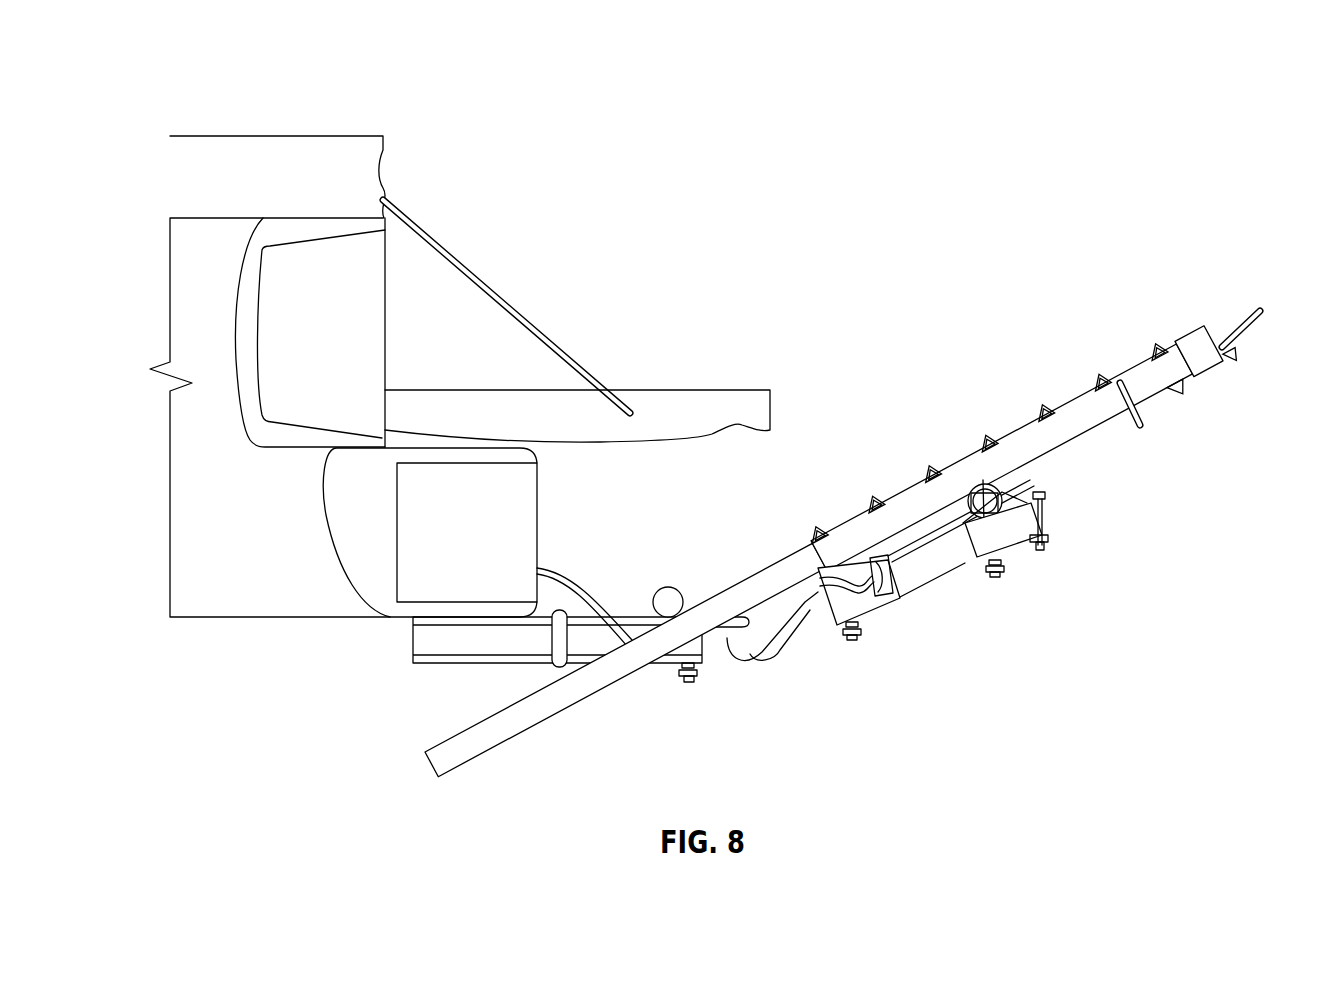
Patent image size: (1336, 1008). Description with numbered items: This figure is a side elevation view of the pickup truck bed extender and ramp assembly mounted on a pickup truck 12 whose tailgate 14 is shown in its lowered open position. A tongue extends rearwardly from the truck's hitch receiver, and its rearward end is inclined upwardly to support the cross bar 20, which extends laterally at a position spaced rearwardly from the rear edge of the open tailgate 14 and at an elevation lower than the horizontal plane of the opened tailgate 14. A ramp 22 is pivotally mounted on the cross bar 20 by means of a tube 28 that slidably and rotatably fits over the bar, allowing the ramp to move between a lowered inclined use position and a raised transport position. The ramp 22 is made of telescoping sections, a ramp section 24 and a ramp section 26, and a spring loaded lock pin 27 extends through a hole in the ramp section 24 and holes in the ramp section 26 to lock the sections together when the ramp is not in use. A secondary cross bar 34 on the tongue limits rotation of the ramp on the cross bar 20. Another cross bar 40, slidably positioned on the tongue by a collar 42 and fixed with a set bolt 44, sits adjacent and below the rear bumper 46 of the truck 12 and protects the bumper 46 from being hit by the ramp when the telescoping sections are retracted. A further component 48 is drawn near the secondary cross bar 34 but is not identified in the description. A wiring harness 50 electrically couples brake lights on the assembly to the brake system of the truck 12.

The pickup truck 12 is at (303, 126).
The tailgate 14 is at (672, 389).
The cross bar 20 is at (997, 487).
The ramp 22 is at (842, 545).
The ramp section 24 is at (900, 490).
The ramp section 26 is at (548, 706).
The spring loaded lock pin 27 is at (1137, 431).
The tube 28 is at (993, 541).
The secondary cross bar 34 is at (818, 608).
The cross bar 40 is at (666, 586).
The collar 42 is at (667, 664).
The set bolt 44 is at (693, 688).
The rear bumper 46 is at (438, 446).
The clamp block 48 is at (897, 576).
The wiring harness 50 is at (557, 573).